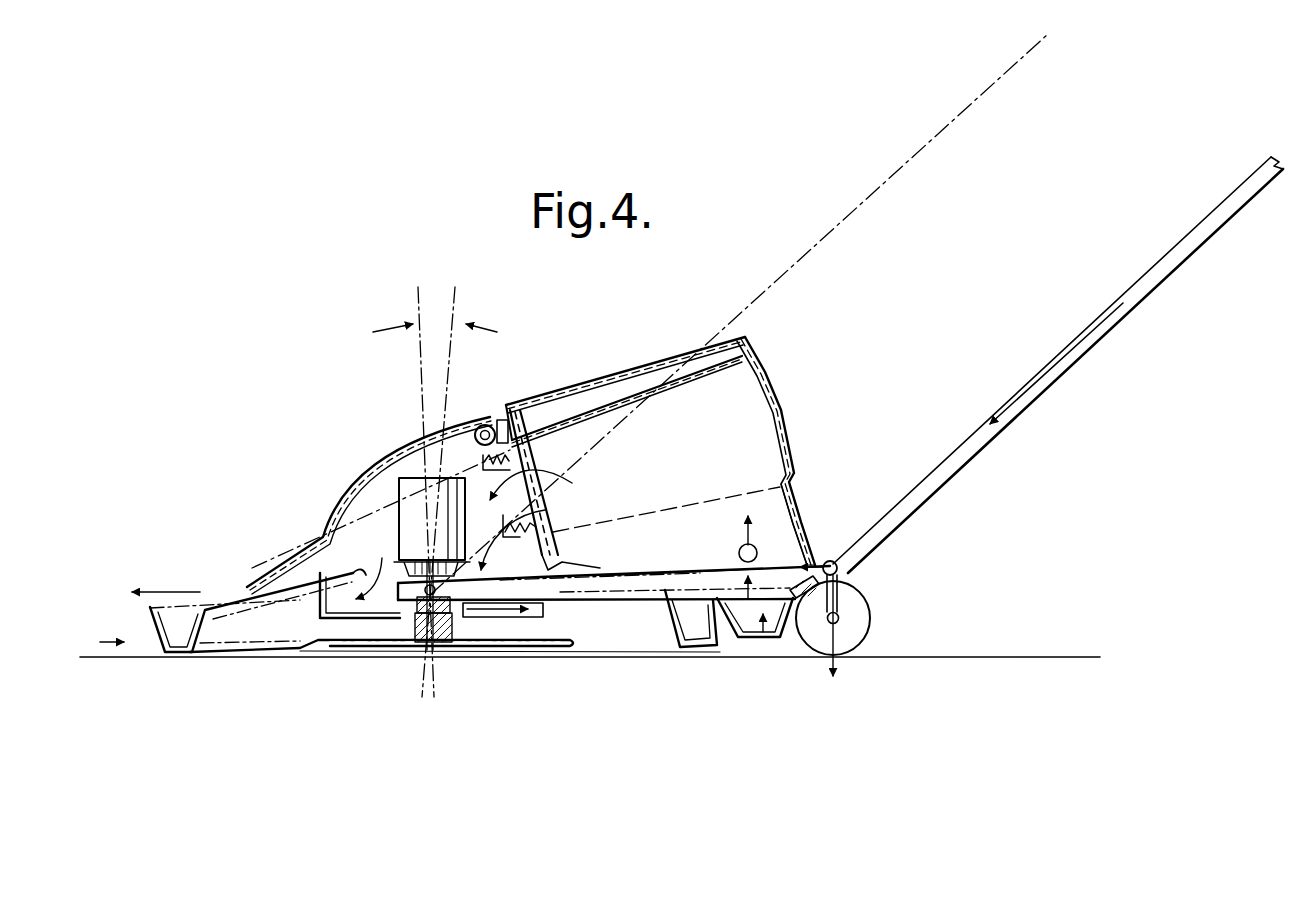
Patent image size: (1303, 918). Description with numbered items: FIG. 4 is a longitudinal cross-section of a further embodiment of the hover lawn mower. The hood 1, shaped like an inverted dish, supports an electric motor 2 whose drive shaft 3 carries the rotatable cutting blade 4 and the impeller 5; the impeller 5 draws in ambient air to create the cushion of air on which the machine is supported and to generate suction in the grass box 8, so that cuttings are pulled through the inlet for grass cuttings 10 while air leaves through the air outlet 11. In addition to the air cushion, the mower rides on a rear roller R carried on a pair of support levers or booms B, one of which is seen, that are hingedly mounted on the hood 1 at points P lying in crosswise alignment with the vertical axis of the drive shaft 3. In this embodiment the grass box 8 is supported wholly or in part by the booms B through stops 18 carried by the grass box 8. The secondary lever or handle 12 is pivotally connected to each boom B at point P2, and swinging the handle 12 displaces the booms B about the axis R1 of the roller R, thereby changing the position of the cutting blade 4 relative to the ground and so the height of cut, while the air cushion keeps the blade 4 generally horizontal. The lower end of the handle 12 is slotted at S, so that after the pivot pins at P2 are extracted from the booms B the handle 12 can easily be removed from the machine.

The hood 1 is at (225, 600).
The electric motor 2 is at (367, 505).
The drive shaft 3 is at (455, 645).
The cutting blade 4 is at (493, 655).
The impeller 5 is at (565, 655).
The grass box 8 is at (776, 366).
The inlet for grass cuttings 10 is at (765, 635).
The air outlet 11 is at (535, 478).
The handle 12 is at (1165, 268).
The stops 18 is at (798, 522).
The support lever or boom B is at (697, 580).
The hinge point P is at (403, 628).
The pivot point P2 is at (834, 566).
The rear roller R is at (860, 626).
The roller axis R1 is at (863, 612).
The slot S is at (795, 636).